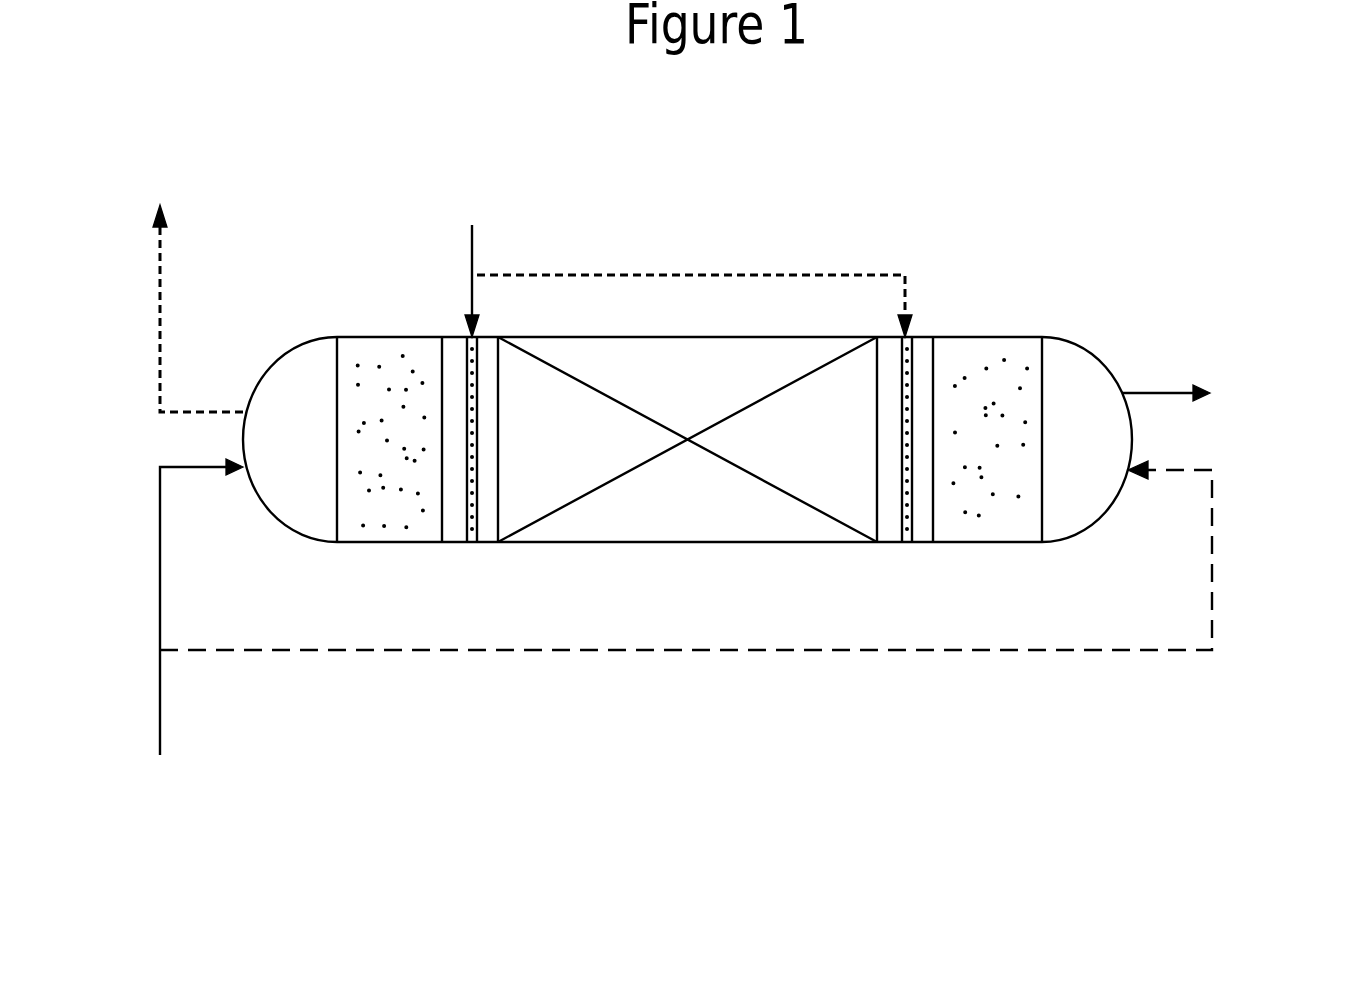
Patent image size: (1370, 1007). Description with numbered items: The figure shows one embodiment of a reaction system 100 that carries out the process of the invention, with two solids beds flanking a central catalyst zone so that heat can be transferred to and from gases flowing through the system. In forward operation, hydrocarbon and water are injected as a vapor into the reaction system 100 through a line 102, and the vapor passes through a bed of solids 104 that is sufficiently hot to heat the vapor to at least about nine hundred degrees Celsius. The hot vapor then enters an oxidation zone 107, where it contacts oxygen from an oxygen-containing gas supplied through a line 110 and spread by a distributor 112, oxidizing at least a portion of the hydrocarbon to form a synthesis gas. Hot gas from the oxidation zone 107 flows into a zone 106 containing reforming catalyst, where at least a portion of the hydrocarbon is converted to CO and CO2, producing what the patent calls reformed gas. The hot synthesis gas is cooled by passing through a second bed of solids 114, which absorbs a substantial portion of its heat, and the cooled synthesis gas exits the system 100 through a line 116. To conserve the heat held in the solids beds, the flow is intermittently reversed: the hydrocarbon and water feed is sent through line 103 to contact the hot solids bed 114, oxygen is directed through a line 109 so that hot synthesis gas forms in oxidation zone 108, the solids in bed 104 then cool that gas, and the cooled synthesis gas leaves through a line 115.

The reaction system 100 is at (1030, 208).
The line 102 is at (159, 535).
The line 103 is at (818, 652).
The bed of solids 104 is at (346, 350).
The zone containing reforming catalyst 106 is at (698, 528).
The oxidation zone 107 is at (448, 533).
The oxidation zone 108 is at (918, 535).
The line 109 is at (668, 274).
The line 110 is at (474, 249).
The distributor 112 is at (456, 340).
The second bed of solids 114 is at (1020, 352).
The line 115 is at (159, 315).
The line 116 is at (1150, 394).